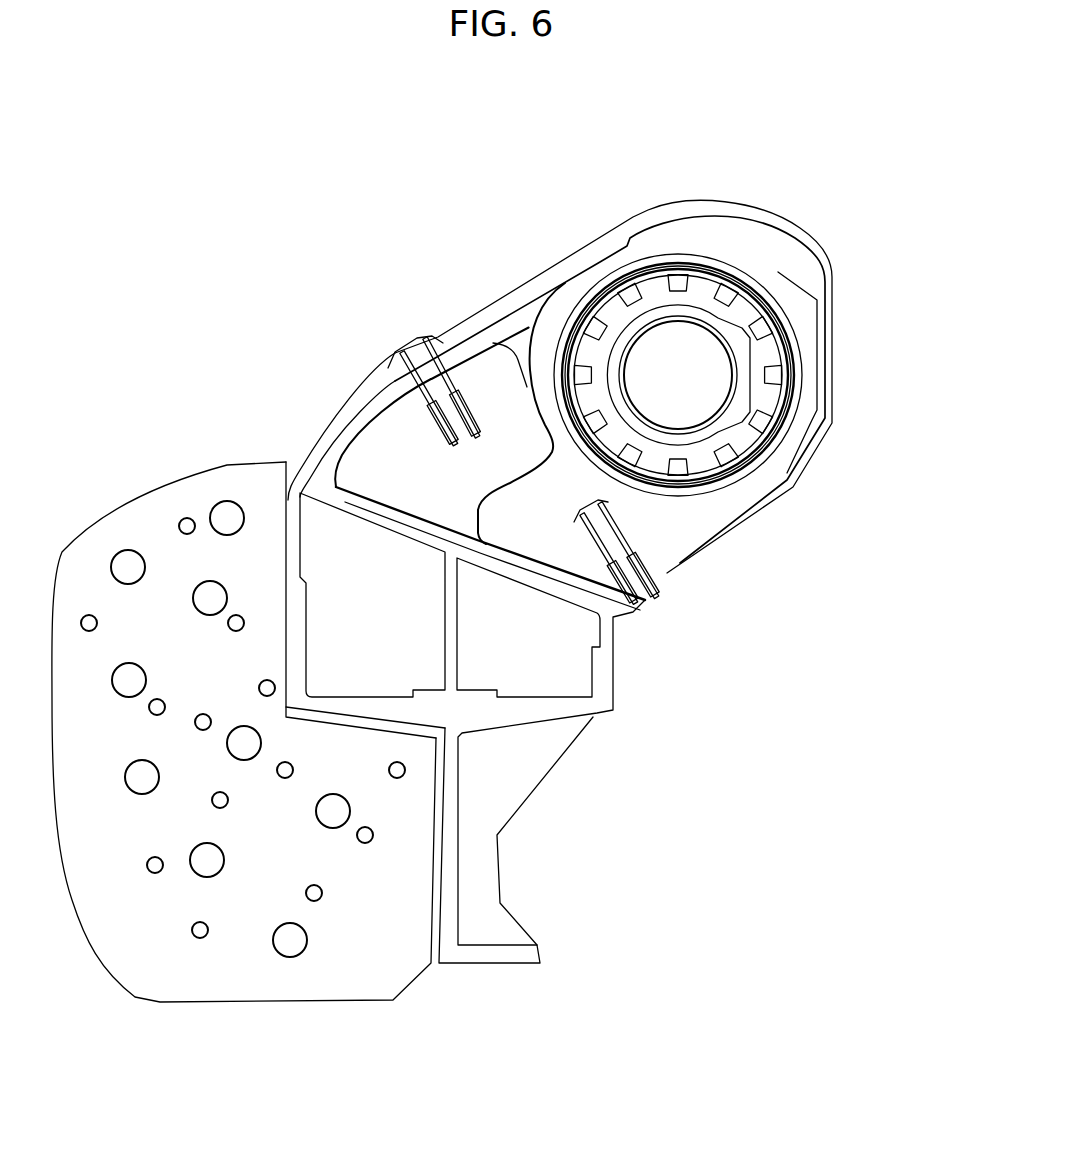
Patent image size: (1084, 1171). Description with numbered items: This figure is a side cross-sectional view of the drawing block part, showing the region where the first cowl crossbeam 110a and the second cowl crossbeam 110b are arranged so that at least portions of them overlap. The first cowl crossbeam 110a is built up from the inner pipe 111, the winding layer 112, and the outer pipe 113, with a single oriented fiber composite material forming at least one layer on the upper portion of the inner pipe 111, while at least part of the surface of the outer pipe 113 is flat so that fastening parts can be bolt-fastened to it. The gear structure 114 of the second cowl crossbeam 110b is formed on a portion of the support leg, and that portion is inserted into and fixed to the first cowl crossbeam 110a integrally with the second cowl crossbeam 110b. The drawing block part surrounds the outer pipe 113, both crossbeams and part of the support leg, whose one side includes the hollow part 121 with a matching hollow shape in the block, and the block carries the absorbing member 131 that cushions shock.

The first cowl crossbeam 110a is at (798, 128).
The second cowl crossbeam 110b is at (722, 410).
The inner pipe 111 is at (722, 281).
The winding layer 112 is at (773, 320).
The outer pipe 113 is at (753, 277).
The gear structure 114 is at (618, 307).
The hollow part 121 is at (392, 450).
The absorbing member 131 is at (153, 535).